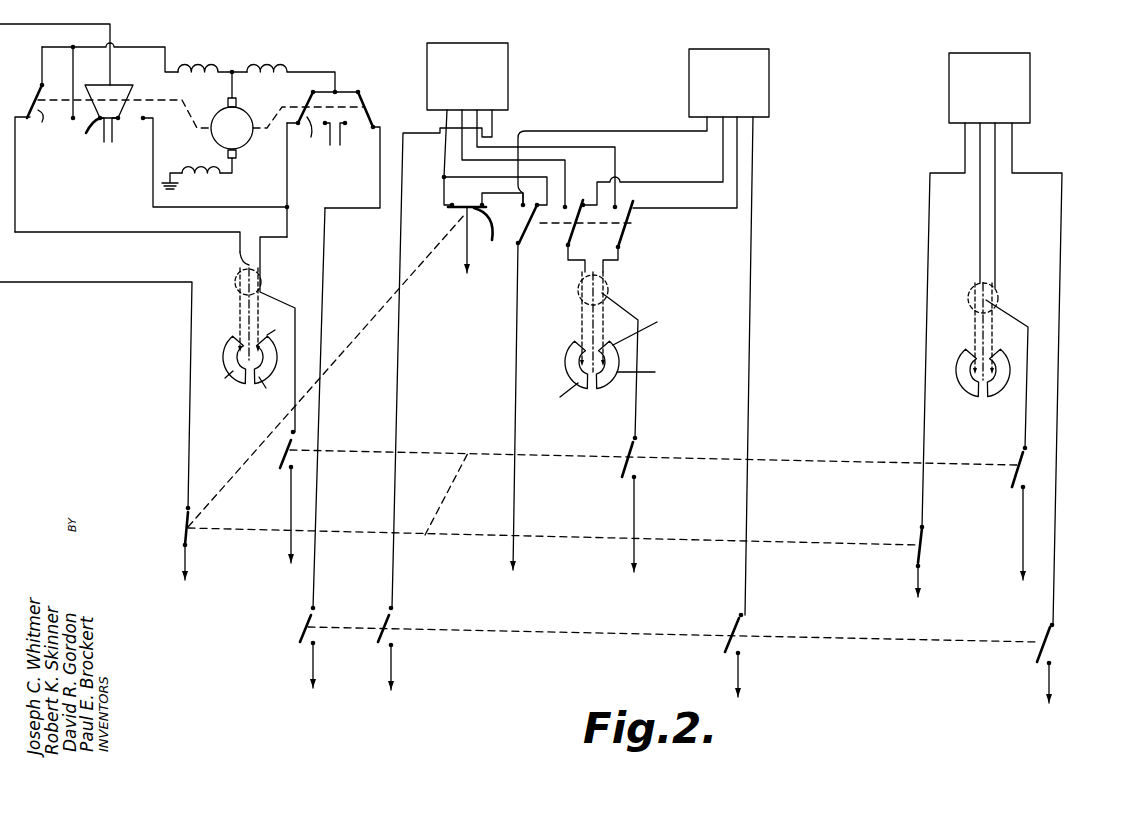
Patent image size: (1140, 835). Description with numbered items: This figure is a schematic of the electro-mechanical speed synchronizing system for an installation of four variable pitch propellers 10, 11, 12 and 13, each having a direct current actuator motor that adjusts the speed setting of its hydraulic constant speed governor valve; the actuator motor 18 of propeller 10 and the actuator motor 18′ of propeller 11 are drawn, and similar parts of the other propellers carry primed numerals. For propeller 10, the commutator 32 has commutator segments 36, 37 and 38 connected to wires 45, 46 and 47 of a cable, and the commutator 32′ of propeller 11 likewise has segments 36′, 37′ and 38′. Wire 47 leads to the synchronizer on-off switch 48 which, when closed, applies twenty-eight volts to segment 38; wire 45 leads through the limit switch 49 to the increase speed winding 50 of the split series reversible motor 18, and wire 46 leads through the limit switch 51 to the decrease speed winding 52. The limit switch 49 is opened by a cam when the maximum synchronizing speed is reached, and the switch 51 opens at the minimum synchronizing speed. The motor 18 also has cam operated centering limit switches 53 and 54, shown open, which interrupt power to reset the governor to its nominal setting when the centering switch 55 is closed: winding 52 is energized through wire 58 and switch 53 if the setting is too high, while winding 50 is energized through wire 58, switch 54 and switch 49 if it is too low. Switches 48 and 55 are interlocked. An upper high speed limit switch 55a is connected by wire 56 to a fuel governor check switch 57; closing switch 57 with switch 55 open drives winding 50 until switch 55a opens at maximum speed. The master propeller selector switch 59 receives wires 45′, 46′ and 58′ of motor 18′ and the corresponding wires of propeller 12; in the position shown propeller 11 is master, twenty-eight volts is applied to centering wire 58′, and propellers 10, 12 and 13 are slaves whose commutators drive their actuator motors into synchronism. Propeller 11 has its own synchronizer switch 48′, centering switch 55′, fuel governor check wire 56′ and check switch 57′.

The variable pitch propeller 10 is at (216, 25).
The variable pitch propeller 11 is at (462, 43).
The variable pitch propeller 12 is at (725, 49).
The variable pitch propeller 13 is at (982, 53).
The direct current actuator motor 18 is at (245, 141).
The actuator motor 18′ is at (508, 93).
The commutator 32 is at (226, 338).
The commutator 32′ is at (573, 349).
The commutator segment 36 is at (268, 390).
The commutator segment 36′ is at (664, 394).
The commutator segment 37 is at (219, 379).
The commutator segment 37′ is at (531, 426).
The commutator segment 38 is at (280, 326).
The commutator segment 38′ is at (664, 338).
The wire 45 is at (287, 177).
The wire 45′ is at (618, 153).
The wire 46 is at (69, 232).
The wire 46′ is at (565, 176).
The wire 47 is at (240, 252).
The synchronizer on-off switch 48 is at (292, 440).
The synchronizer on-off switch 48′ is at (637, 446).
The limit switch 49 is at (323, 122).
The increase speed winding 50 is at (272, 65).
The limit switch 51 is at (40, 109).
The decrease speed winding 52 is at (200, 65).
The centering limit switch 53 is at (95, 133).
The centering limit switch 54 is at (133, 92).
The centering switch 55 is at (187, 516).
The upper high speed limit switch 55a is at (363, 106).
The centering switch 55′ is at (483, 286).
The wire 56 is at (325, 302).
The wire 56′ is at (398, 343).
The fuel governor check switch 57 is at (315, 616).
The fuel governor check switch 57′ is at (393, 616).
The wire 58 is at (99, 282).
The centering wire 58′ is at (440, 158).
The master propeller selector switch 59 is at (625, 232).